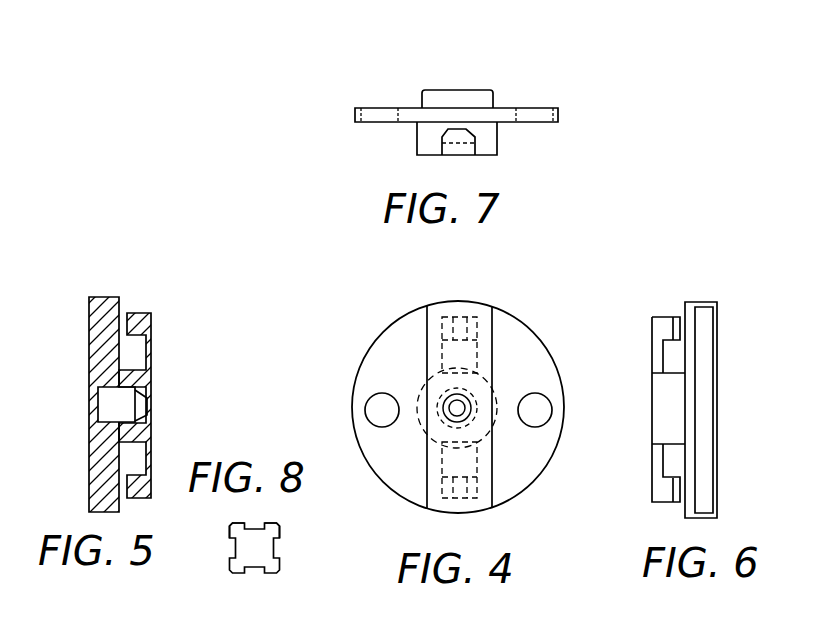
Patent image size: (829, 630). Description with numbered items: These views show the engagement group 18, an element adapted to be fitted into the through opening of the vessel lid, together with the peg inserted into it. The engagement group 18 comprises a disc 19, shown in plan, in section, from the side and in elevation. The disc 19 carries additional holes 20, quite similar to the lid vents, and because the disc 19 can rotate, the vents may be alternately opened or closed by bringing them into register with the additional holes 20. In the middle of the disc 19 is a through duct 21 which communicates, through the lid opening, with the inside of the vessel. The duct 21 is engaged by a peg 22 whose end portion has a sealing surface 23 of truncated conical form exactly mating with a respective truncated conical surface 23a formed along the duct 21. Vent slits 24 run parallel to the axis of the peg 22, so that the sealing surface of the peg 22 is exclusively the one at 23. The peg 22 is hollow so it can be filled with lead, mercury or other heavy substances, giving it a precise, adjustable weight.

In FIG. 7, the engagement group 18 is at (453, 139).
In FIG. 5, the engagement group 18 is at (153, 347).
In FIG. 4, the engagement group 18 is at (518, 313).
In FIG. 6, the engagement group 18 is at (650, 345).
In FIG. 7, the disc 19 is at (500, 107).
In FIG. 5, the disc 19 is at (100, 313).
In FIG. 4, the disc 19 is at (382, 357).
In FIG. 6, the disc 19 is at (715, 348).
In FIG. 7, the additional holes 20 is at (375, 118).
In FIG. 4, the additional holes 20 is at (373, 407).
In FIG. 5, the through duct 21 is at (112, 404).
In FIG. 8, the peg 22 is at (225, 577).
In FIG. 8, the sealing surface 23 is at (317, 623).
In FIG. 5, the surface 23a is at (142, 400).
In FIG. 8, the vent slits 24 is at (230, 548).